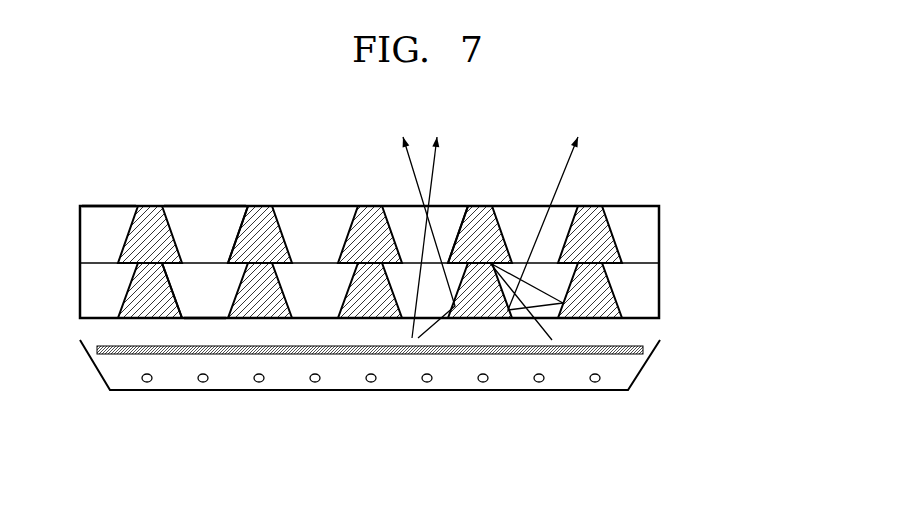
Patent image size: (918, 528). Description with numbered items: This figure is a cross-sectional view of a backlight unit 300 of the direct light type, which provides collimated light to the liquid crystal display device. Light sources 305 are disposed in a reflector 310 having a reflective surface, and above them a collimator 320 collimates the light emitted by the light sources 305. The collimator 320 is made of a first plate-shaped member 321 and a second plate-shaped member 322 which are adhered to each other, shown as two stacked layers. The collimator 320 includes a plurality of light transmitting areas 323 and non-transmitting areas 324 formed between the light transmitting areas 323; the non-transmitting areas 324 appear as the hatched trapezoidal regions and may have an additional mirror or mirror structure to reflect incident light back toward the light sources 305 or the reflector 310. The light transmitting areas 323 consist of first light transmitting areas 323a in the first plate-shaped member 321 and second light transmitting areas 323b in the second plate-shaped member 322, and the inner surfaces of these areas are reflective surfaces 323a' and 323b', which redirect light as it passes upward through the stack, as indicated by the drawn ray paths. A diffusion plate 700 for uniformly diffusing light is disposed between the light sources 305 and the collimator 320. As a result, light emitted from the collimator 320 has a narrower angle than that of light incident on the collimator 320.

The backlight unit 300 is at (442, 287).
The light sources 305 is at (483, 383).
The reflector 310 is at (578, 391).
The collimator 320 is at (442, 301).
The first plate-shaped member 321 is at (433, 357).
The second plate-shaped member 322 is at (414, 206).
The light transmitting areas 323 is at (103, 213).
The first light transmitting areas 323a is at (219, 378).
The reflective surfaces 323a' is at (170, 357).
The second light transmitting areas 323b is at (334, 206).
The reflective surfaces 323b' is at (259, 207).
The non-transmitting areas 324 is at (150, 213).
The diffusion plate 700 is at (643, 350).